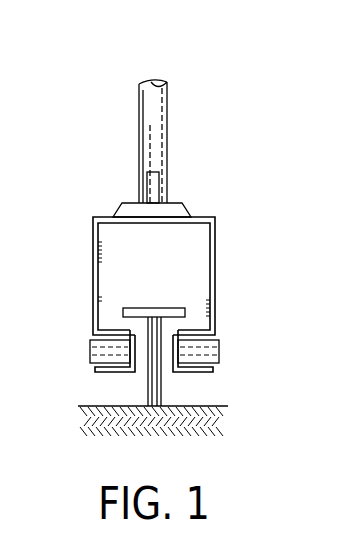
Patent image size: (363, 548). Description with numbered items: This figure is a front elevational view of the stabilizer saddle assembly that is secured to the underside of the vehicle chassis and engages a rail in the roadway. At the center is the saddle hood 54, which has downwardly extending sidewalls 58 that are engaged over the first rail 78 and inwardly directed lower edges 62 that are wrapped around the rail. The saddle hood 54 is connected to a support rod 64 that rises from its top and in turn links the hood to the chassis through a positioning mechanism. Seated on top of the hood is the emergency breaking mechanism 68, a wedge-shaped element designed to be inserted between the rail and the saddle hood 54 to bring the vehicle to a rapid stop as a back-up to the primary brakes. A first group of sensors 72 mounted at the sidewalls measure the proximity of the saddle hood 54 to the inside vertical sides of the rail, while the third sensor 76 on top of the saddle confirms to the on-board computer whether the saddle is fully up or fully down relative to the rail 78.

The saddle hood 54 is at (215, 258).
The sidewalls 58 is at (215, 297).
The inwardly directed lower edges 62 is at (207, 372).
The support rod 64 is at (167, 110).
The emergency breaking mechanism 68 is at (193, 205).
The first group of sensors 72 is at (219, 348).
The third sensor 76 is at (155, 180).
The first rail 78 is at (140, 307).